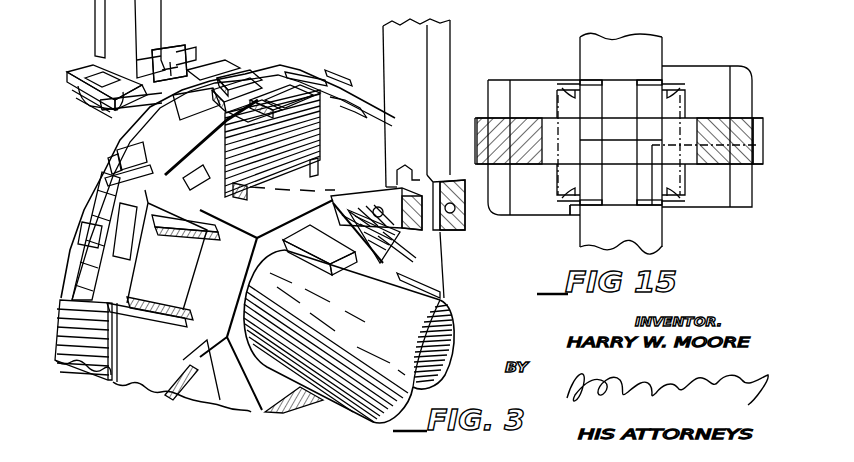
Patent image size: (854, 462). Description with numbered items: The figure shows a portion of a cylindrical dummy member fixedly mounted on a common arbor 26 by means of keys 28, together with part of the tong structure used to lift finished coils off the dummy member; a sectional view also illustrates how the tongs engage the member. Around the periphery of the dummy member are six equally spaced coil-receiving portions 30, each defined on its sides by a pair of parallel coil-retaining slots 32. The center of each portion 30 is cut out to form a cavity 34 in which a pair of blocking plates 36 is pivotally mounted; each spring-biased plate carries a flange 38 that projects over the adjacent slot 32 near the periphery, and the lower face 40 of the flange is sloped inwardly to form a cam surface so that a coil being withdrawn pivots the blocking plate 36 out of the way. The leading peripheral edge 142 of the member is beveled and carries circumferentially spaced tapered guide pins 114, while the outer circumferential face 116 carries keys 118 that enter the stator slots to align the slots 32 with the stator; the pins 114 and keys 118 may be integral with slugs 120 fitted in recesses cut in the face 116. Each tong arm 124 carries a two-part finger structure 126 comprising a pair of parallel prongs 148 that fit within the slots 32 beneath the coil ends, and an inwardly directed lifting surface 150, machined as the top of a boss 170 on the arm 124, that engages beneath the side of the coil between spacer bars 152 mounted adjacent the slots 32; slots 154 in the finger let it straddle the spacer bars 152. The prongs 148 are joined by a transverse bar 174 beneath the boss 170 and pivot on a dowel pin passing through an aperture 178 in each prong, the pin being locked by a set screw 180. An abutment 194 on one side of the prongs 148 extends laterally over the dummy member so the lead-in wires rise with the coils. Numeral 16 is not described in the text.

In FIG. 15, the shaft 16 is at (612, 212).
In FIG. 3, the arbor 26 is at (438, 300).
In FIG. 3, the key 28 is at (318, 260).
In FIG. 3, the coil-receiving portion 30 is at (96, 190).
In FIG. 3, the coil-retaining slot 32 is at (100, 178).
In FIG. 15, the coil-retaining slot 32 is at (598, 80).
In FIG. 3, the cavity 34 is at (86, 232).
In FIG. 3, the blocking plate 36 is at (120, 210).
In FIG. 3, the flange 38 is at (68, 302).
In FIG. 3, the lower face 40 is at (150, 170).
In FIG. 3, the tapered guide pin 114 is at (198, 176).
In FIG. 3, the outer circumferential face 116 is at (302, 72).
In FIG. 3, the key 118 is at (120, 155).
In FIG. 3, the slug 120 is at (150, 158).
In FIG. 3, the tong arm 124 is at (442, 58).
In FIG. 15, the tong arm 124 is at (494, 125).
In FIG. 3, the finger structure 126 is at (84, 62).
In FIG. 3, the leading peripheral edge 142 is at (195, 158).
In FIG. 3, the prong 148 is at (232, 74).
In FIG. 15, the prong 148 is at (572, 80).
In FIG. 3, the lifting surface 150 is at (388, 175).
In FIG. 3, the spacer bar 152 is at (300, 118).
In FIG. 3, the slot 154 is at (112, 64).
In FIG. 15, the slot 154 is at (562, 94).
In FIG. 3, the boss 170 is at (172, 56).
In FIG. 3, the transverse bar 174 is at (140, 103).
In FIG. 3, the aperture 178 is at (88, 98).
In FIG. 3, the set screw 180 is at (455, 215).
In FIG. 3, the abutment 194 is at (78, 95).
In FIG. 15, the abutment 194 is at (568, 217).